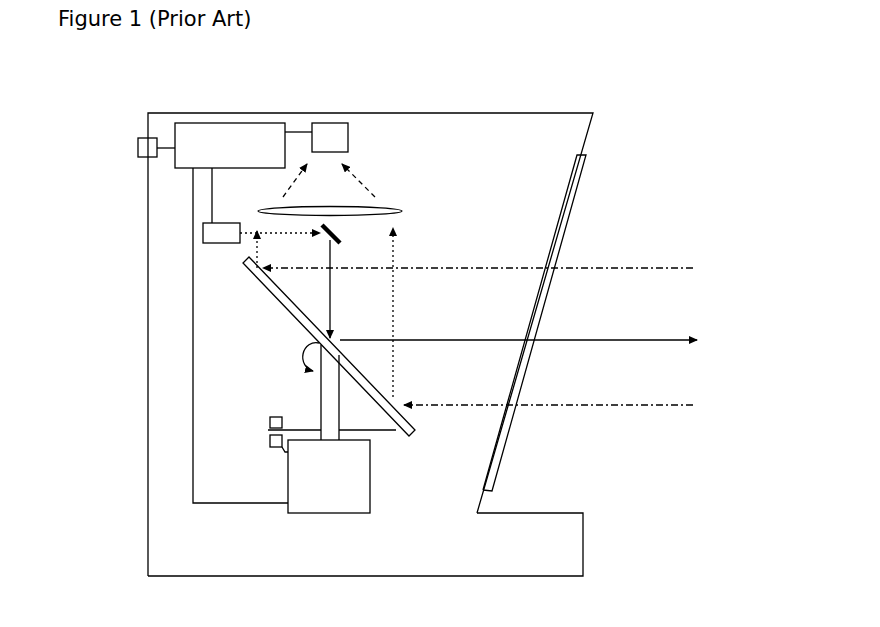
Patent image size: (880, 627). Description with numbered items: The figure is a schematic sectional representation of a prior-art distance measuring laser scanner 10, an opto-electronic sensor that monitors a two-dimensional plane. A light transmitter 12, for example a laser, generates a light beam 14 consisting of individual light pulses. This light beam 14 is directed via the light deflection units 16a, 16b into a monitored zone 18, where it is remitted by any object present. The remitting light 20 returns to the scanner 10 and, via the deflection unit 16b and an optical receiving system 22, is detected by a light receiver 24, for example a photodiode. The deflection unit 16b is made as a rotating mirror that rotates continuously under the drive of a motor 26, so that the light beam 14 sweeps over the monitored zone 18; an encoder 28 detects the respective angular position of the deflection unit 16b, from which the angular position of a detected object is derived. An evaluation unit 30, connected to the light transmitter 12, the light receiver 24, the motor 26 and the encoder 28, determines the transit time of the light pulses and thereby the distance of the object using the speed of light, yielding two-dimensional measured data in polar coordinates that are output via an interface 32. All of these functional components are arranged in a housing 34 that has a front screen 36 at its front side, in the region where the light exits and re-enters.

The distance measuring laser scanner 10 is at (410, 326).
The light transmitter 12 is at (202, 249).
The light beam 14 is at (518, 366).
The light deflection unit 16a is at (407, 228).
The light deflection unit 16b is at (325, 346).
The monitored zone 18 is at (714, 170).
The remitting light 20 is at (478, 294).
The optical receiving system 22 is at (350, 192).
The light receiver 24 is at (358, 139).
The motor 26 is at (361, 489).
The encoder 28 is at (260, 450).
The evaluation unit 30 is at (230, 123).
The interface 32 is at (127, 117).
The housing 34 is at (399, 544).
The front screen 36 is at (534, 323).